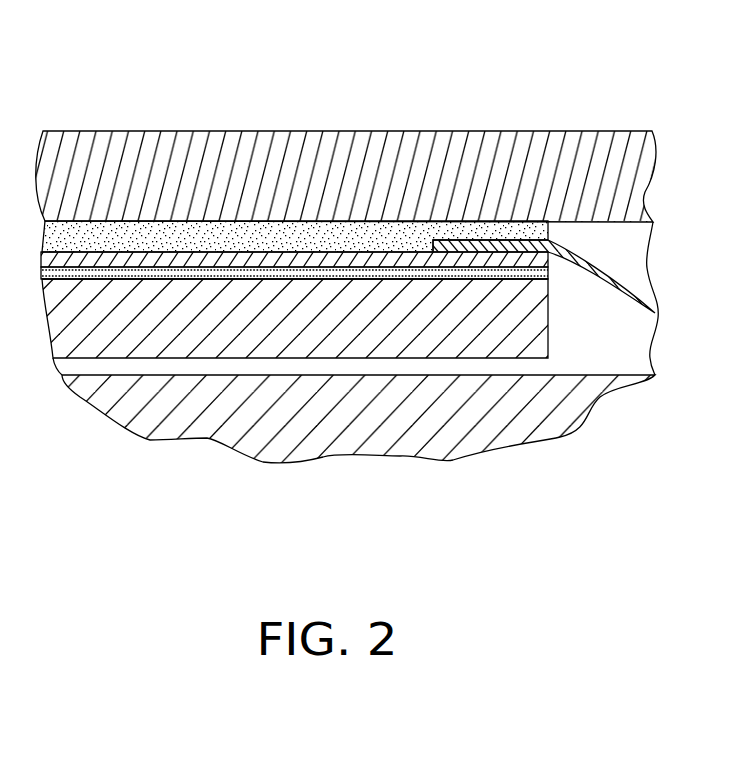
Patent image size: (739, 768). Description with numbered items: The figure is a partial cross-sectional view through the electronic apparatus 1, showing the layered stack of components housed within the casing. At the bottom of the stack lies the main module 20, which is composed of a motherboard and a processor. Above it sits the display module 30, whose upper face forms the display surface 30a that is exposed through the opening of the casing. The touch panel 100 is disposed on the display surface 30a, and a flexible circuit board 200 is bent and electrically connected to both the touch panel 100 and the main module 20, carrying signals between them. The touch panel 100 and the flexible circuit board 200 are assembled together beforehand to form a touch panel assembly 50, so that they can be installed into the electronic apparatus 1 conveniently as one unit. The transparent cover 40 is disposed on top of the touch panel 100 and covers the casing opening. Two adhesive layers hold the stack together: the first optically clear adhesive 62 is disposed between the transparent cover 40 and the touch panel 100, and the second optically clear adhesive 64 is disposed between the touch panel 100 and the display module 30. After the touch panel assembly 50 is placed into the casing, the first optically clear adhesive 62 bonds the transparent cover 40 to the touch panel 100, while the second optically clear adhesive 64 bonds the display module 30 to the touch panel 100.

The electronic apparatus 1 is at (677, 517).
The main module 20 is at (118, 390).
The display module 30 is at (232, 320).
The display surface 30a is at (180, 266).
The transparent cover 40 is at (517, 173).
The touch panel assembly 50 is at (440, 67).
The first optically clear adhesive 62 is at (290, 262).
The second optically clear adhesive 64 is at (123, 272).
The touch panel 100 is at (347, 250).
The flexible circuit board 200 is at (451, 240).